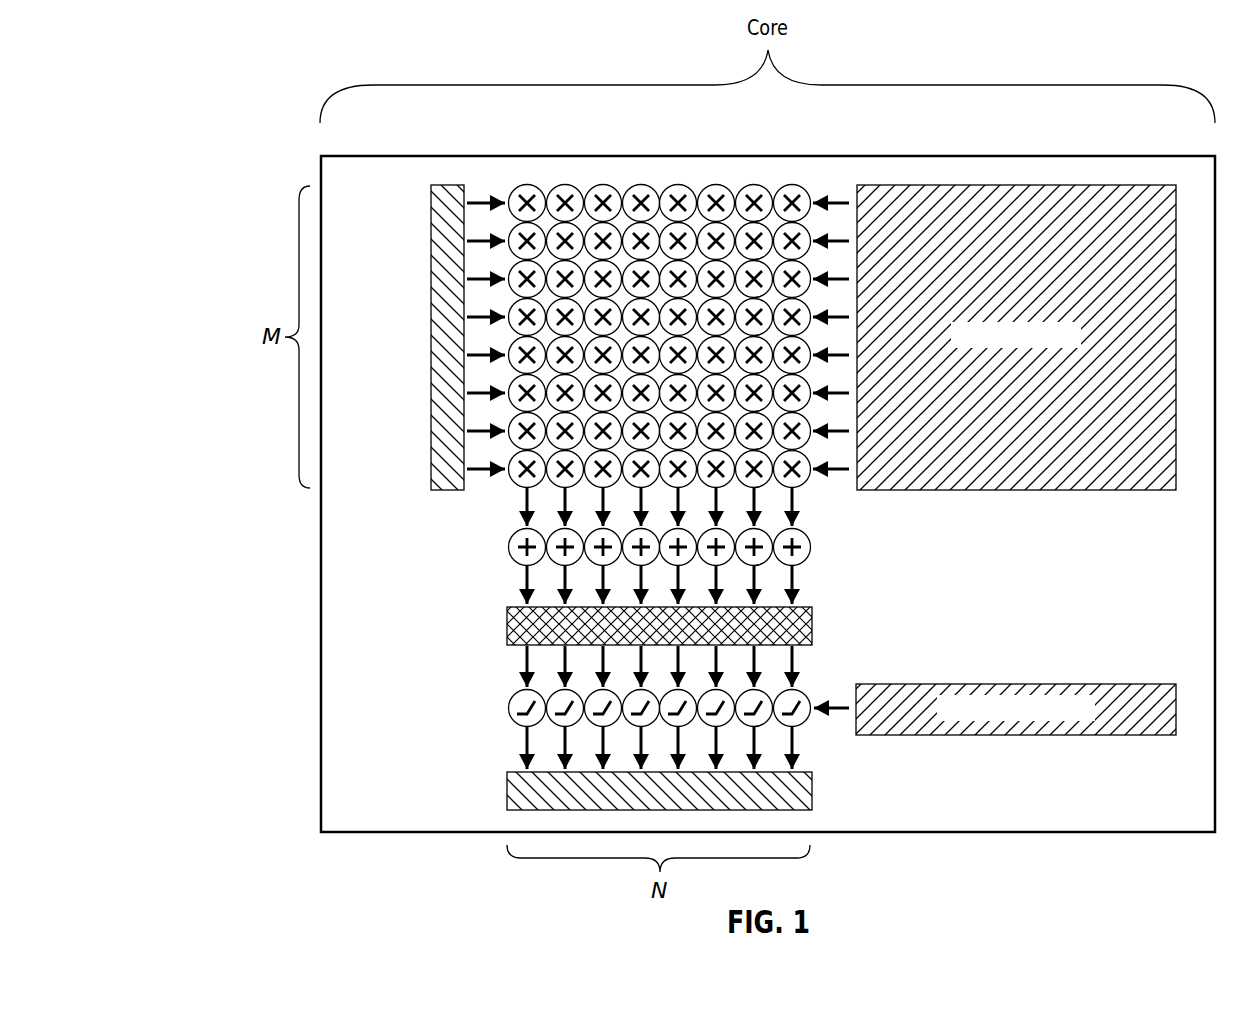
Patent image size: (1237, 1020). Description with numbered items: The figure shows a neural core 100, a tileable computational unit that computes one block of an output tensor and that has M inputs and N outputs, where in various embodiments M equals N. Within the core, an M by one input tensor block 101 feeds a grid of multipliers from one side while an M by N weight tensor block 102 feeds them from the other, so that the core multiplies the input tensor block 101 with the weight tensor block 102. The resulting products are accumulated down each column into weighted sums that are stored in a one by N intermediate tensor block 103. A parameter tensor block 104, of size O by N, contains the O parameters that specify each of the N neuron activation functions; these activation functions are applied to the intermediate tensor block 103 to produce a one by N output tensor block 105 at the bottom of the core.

The neural core 100 is at (255, 123).
The input tensor block 101 is at (447, 185).
The weight tensor block 102 is at (1015, 185).
The intermediate tensor block 103 is at (812, 628).
The parameter tensor block 104 is at (1016, 684).
The output tensor block 105 is at (812, 790).